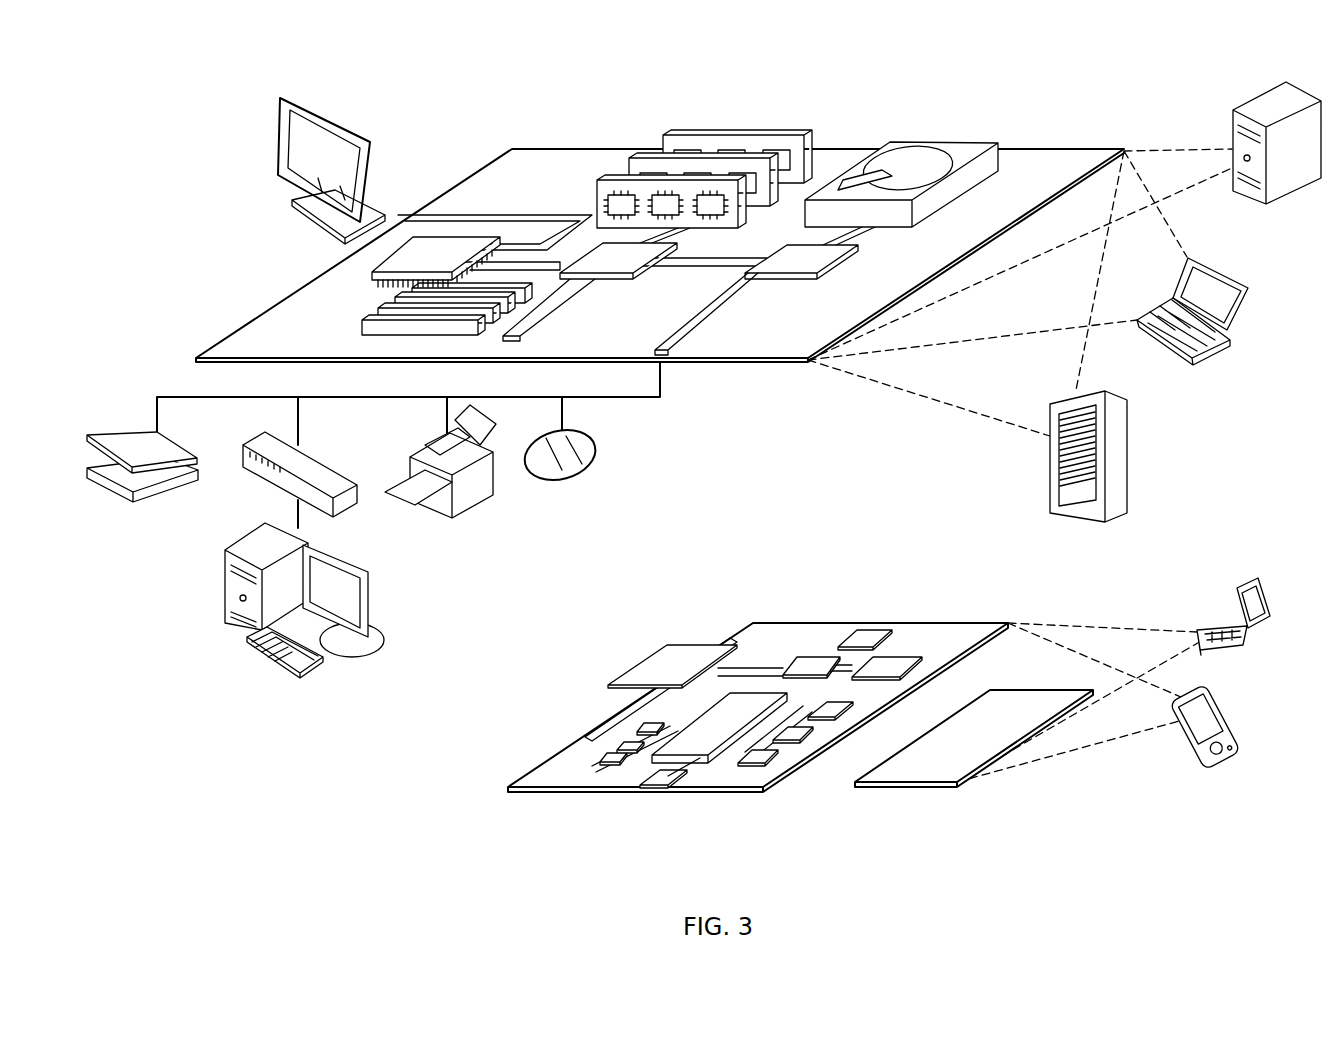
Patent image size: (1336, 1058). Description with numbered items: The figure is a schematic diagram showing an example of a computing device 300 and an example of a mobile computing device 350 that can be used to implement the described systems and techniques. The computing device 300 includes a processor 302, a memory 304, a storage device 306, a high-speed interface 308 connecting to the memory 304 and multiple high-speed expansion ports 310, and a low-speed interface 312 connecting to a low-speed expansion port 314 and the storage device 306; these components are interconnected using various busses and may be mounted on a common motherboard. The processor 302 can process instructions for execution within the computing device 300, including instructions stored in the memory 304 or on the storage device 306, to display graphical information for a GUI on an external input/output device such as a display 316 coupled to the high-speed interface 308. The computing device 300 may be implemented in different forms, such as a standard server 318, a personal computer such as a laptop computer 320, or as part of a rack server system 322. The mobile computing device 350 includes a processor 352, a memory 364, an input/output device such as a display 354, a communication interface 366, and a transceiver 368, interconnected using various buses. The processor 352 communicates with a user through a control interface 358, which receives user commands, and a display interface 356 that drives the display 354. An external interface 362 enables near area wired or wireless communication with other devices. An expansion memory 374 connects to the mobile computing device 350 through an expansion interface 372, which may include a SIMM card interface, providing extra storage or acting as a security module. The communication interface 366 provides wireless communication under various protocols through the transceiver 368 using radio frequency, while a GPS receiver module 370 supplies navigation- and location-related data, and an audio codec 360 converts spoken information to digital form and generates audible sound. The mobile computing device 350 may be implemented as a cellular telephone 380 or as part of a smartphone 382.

The computing device 300 is at (487, 116).
The processor 302 is at (386, 258).
The memory 304 is at (735, 133).
The storage device 306 is at (940, 147).
The high-speed interface 308 is at (613, 276).
The high-speed expansion ports 310 is at (362, 328).
The low-speed interface 312 is at (845, 262).
The low-speed expansion port 314 is at (718, 327).
The display 316 is at (282, 100).
The standard server 318 is at (1238, 106).
The laptop computer 320 is at (1248, 291).
The rack server system 322 is at (1127, 463).
The mobile computing device 350 is at (715, 572).
The processor 352 is at (713, 713).
The display 354 is at (905, 785).
The display interface 356 is at (757, 766).
The control interface 358 is at (797, 743).
The audio codec 360 is at (830, 720).
The external interface 362 is at (658, 790).
The memory 364 is at (598, 754).
The communication interface 366 is at (820, 657).
The transceiver 368 is at (897, 657).
The GPS receiver module 370 is at (873, 630).
The expansion interface 372 is at (738, 642).
The expansion memory 374 is at (646, 658).
The cellular telephone 380 is at (1262, 582).
The smartphone 382 is at (1230, 703).